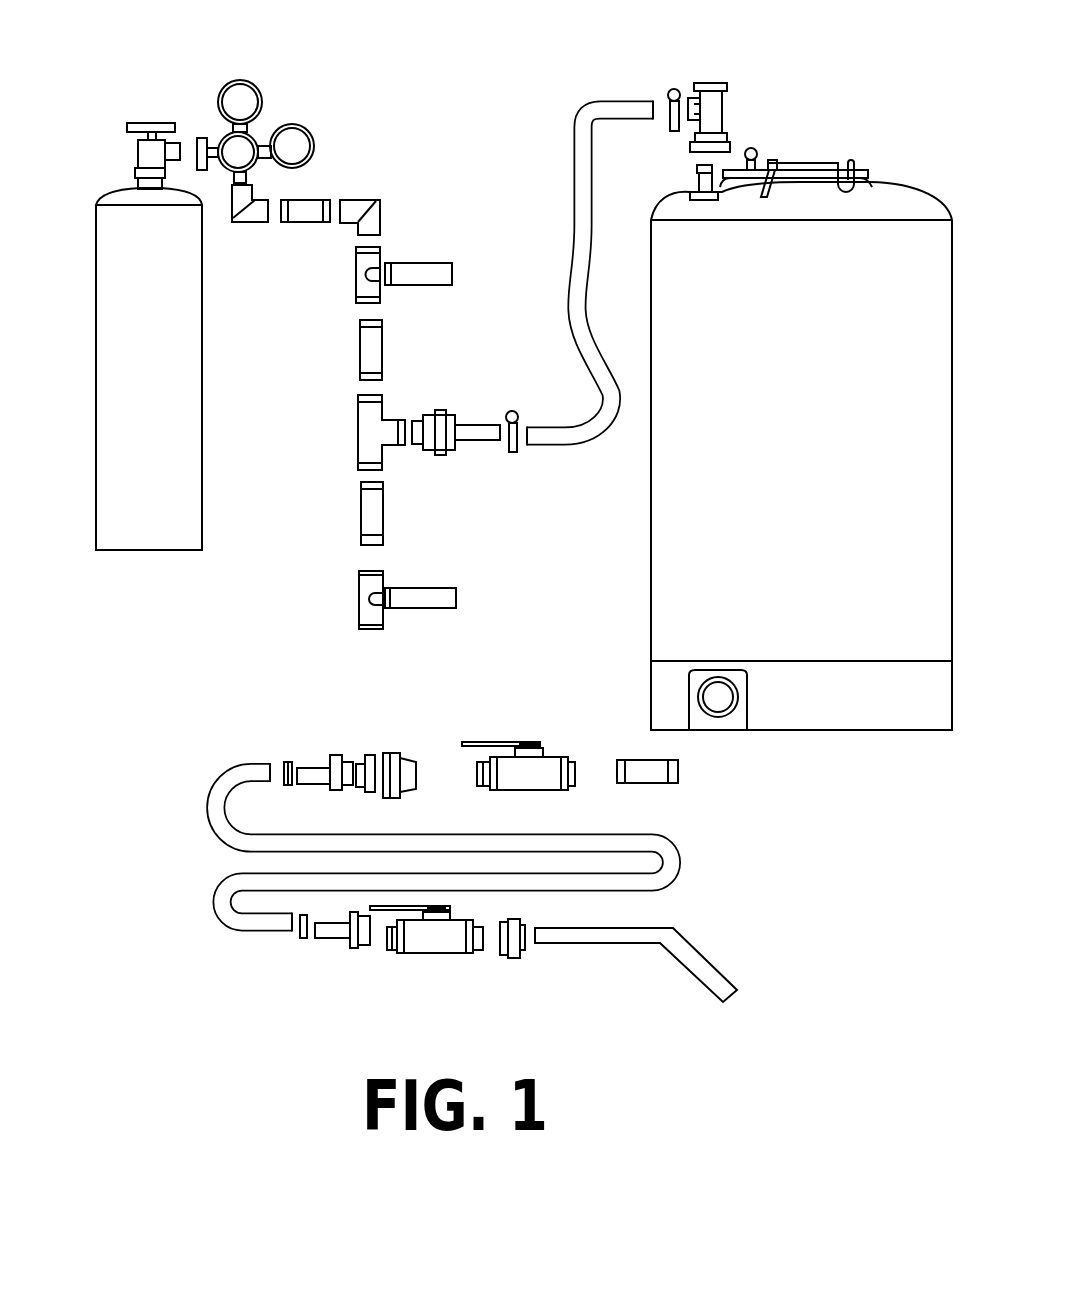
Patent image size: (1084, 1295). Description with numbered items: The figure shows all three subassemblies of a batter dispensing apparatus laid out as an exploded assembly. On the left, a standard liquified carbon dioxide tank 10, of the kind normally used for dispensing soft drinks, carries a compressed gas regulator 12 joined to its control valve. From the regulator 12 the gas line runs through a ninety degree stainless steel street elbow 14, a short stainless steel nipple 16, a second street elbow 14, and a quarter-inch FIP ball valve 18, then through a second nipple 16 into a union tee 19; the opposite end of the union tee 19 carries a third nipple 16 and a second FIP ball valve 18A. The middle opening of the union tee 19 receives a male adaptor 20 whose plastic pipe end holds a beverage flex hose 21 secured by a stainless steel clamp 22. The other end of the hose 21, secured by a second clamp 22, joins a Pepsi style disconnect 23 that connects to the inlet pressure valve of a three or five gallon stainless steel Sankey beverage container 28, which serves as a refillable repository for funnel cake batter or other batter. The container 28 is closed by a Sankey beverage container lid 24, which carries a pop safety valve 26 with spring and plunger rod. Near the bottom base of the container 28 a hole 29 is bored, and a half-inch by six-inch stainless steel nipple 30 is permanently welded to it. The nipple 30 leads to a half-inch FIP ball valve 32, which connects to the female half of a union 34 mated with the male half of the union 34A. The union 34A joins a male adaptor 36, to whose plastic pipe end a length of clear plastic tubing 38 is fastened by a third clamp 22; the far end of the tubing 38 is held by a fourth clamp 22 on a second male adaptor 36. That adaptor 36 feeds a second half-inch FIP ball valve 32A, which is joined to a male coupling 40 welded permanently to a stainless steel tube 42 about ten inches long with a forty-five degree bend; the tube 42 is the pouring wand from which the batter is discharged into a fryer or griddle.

The liquified carbon dioxide tank 10 is at (136, 336).
The compressed gas regulator 12 is at (218, 152).
The 90 degree stainless steel street elbow 14 is at (254, 218).
The stainless steel nipple 16 is at (302, 215).
The FIP ball valve 18 is at (370, 260).
The FIP ball valve 18A is at (378, 615).
The union tee 19 is at (368, 433).
The male adaptor 20 is at (440, 418).
The beverage flex hose 21 is at (592, 112).
The stainless steel clamp 22 is at (518, 432).
The Pepsi style disconnect 23 is at (707, 83).
The Sankey beverage container lid 24 is at (738, 165).
The pop safety valve 26 is at (757, 167).
The Sankey beverage container 28 is at (771, 451).
The hole 29 is at (720, 705).
The stainless steel nipple 30 is at (658, 777).
The FIP ball valve 32 is at (535, 768).
The FIP ball valve 32A is at (427, 944).
The female half of union 34 is at (390, 798).
The male half of union 34A is at (366, 762).
The male adaptor 36 is at (303, 778).
The clear plastic tubing 38 is at (236, 819).
The male coupling 40 is at (515, 958).
The stainless steel tube 42 is at (643, 937).